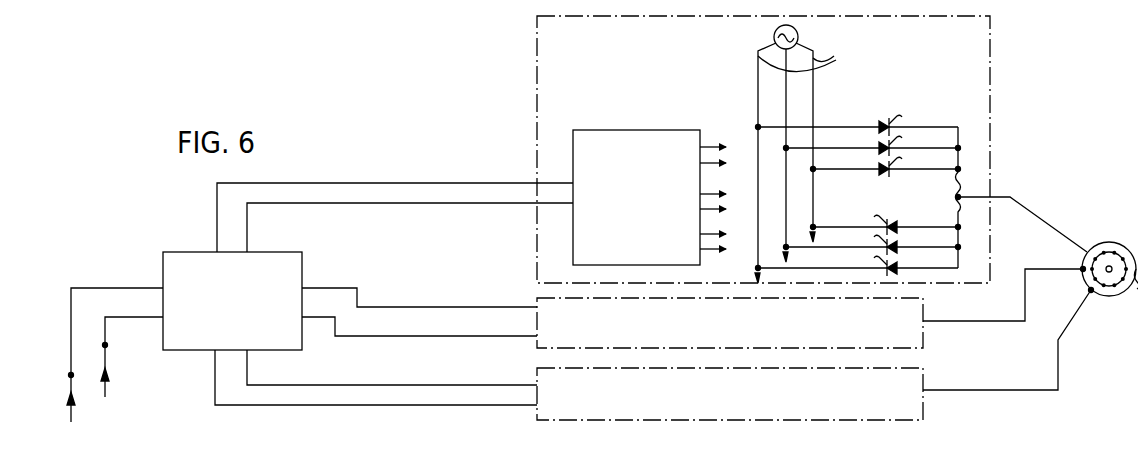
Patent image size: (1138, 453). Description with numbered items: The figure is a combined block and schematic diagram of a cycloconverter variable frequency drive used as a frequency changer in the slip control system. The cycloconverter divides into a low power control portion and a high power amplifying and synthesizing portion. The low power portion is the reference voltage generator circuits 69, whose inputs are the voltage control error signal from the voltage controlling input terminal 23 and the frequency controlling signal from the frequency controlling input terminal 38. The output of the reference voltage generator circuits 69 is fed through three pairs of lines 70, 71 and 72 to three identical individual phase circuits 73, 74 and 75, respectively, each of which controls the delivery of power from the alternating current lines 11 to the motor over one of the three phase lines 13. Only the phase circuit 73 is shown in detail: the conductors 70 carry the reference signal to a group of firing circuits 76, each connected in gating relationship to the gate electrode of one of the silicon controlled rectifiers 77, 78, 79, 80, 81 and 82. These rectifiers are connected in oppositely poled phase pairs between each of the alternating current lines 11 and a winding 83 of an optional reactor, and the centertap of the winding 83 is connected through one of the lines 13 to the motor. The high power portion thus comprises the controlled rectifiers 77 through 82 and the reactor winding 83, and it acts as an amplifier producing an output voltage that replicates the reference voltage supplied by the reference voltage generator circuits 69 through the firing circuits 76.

The alternating current lines 11 is at (820, 54).
The three phase lines 13 is at (1083, 237).
The voltage controlling input terminal 23 is at (107, 345).
The frequency controlling input terminal 38 is at (69, 376).
The reference voltage generator circuits 69 is at (190, 252).
The pair of lines 70 is at (246, 214).
The pair of lines 71 is at (407, 307).
The pair of lines 72 is at (380, 383).
The individual phase circuit 73 is at (535, 112).
The individual phase circuit 74 is at (536, 300).
The individual phase circuit 75 is at (535, 375).
The firing circuits 76 is at (656, 132).
The silicon controlled rectifier 77 is at (902, 121).
The silicon controlled rectifier 78 is at (902, 139).
The silicon controlled rectifier 79 is at (902, 161).
The silicon controlled rectifier 80 is at (897, 221).
The silicon controlled rectifier 81 is at (895, 238).
The silicon controlled rectifier 82 is at (895, 261).
The winding 83 is at (963, 184).